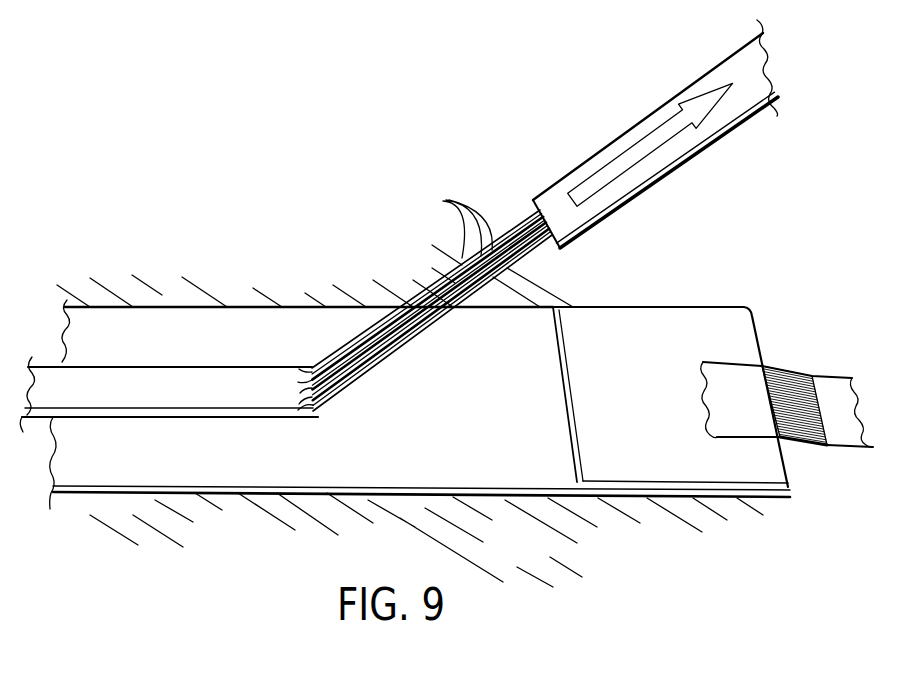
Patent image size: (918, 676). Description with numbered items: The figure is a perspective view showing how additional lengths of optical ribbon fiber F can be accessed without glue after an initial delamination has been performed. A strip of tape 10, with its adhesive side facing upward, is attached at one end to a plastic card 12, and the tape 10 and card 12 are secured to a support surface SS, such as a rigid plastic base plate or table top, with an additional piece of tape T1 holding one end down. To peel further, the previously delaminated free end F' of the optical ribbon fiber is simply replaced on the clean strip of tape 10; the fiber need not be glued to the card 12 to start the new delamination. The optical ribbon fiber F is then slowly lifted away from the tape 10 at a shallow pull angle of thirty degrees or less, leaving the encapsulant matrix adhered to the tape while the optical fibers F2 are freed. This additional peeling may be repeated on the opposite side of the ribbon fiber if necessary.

The strip of tape 10 is at (226, 474).
The plastic card 12 is at (626, 441).
The optical ribbon fiber F is at (655, 134).
The free end of the optical ribbon fiber F' is at (169, 378).
The optical fibers F2 is at (443, 201).
The piece of tape T1 is at (746, 412).
The support surface SS is at (535, 552).